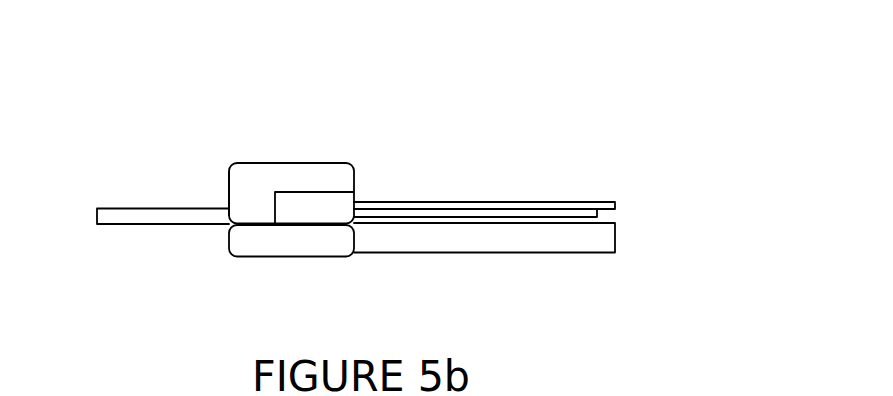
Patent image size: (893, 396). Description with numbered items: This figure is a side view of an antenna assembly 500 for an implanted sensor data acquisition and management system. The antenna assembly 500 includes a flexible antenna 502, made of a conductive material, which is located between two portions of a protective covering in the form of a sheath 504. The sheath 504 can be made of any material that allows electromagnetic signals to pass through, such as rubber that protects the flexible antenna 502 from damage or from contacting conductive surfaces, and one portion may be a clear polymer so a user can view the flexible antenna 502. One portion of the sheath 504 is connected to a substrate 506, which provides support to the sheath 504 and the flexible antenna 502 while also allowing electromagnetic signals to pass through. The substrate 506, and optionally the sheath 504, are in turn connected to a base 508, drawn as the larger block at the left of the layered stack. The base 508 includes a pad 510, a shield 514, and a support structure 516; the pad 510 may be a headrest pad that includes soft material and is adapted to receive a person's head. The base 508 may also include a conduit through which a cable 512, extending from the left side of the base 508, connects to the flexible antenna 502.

The antenna assembly 500 is at (150, 75).
The flexible antenna 502 is at (507, 212).
The sheath 504 is at (615, 202).
The substrate 506 is at (537, 254).
The base 508 is at (263, 145).
The pad 510 is at (229, 187).
The cable 512 is at (110, 226).
The shield 514 is at (340, 207).
The support structure 516 is at (244, 256).